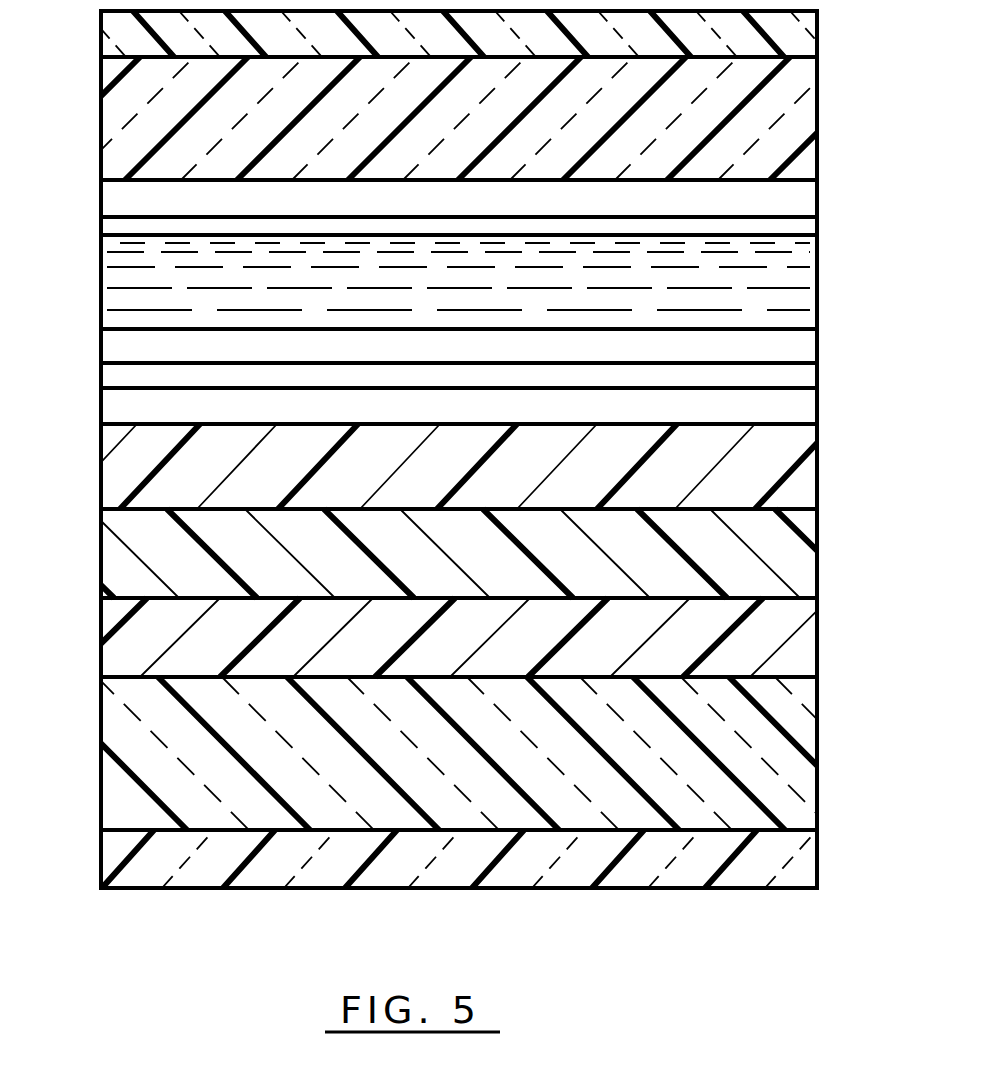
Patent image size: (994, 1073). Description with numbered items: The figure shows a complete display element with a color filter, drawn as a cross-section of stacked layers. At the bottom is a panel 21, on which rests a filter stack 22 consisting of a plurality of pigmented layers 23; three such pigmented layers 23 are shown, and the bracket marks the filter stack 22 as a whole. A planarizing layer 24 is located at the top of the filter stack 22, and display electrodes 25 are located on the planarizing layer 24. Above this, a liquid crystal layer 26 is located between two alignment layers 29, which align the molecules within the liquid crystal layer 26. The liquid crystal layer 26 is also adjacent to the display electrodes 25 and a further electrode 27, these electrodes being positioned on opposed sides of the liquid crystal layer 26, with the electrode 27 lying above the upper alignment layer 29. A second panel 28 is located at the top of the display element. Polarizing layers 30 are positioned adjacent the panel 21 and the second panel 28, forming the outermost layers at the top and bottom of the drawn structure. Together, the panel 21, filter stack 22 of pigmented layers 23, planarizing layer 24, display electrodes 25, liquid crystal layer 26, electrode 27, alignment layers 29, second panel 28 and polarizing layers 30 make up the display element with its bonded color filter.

The polarizing layer 30 is at (792, 38).
The second panel 28 is at (750, 128).
The electrode 27 is at (790, 200).
The alignment layer 29 is at (797, 226).
The liquid crystal layer 26 is at (783, 300).
The display electrode 25 is at (787, 375).
The planarizing layer 24 is at (800, 410).
The filter stack 22 is at (465, 550).
The pigmented layer 23 is at (123, 470).
The panel 21 is at (775, 745).